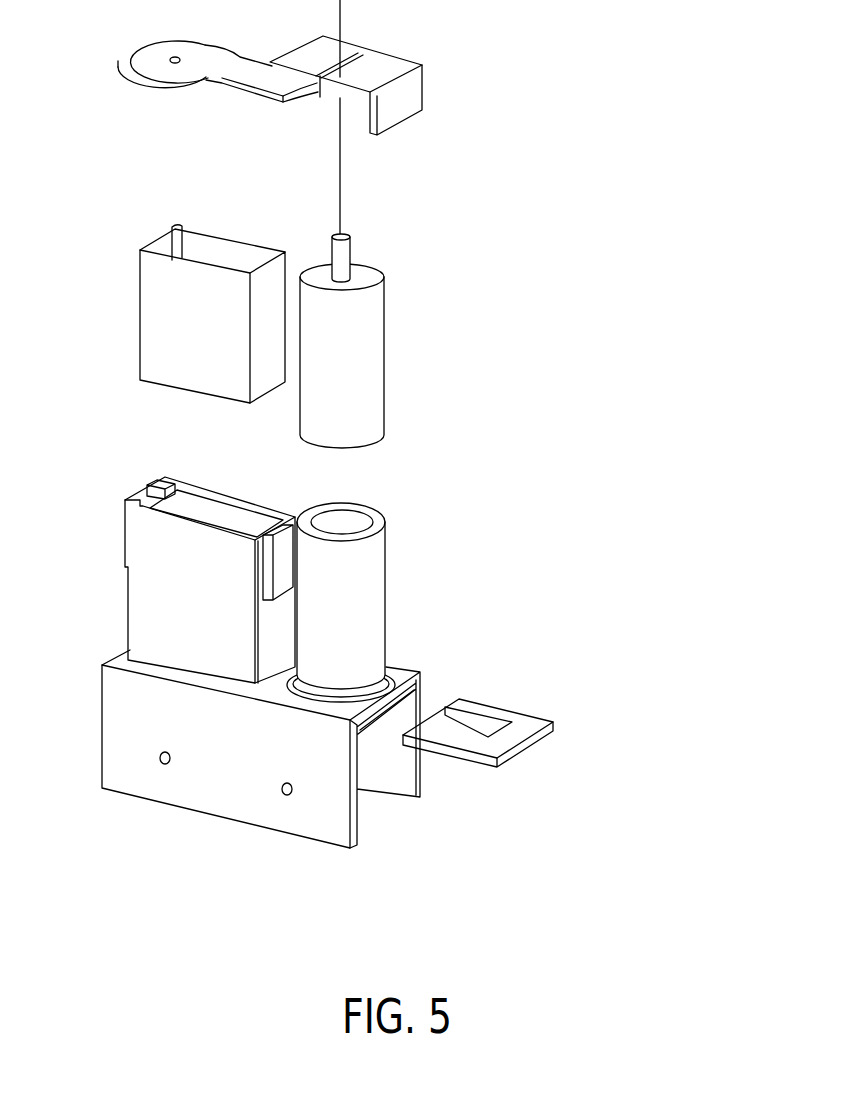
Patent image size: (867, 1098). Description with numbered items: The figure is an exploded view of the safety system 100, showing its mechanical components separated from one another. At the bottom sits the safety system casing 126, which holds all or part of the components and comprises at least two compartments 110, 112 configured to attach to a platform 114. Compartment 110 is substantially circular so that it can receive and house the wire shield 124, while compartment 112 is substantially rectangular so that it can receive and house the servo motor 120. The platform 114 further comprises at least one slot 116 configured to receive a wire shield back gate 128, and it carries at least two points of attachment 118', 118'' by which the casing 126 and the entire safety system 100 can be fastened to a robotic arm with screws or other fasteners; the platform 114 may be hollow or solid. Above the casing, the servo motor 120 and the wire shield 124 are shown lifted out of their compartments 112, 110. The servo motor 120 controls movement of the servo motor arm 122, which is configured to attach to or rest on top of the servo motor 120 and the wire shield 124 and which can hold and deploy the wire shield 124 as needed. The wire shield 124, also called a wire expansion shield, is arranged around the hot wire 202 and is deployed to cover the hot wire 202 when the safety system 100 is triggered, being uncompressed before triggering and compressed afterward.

The safety system 100 is at (644, 356).
The compartment 110 is at (378, 645).
The compartment 112 is at (143, 603).
The platform 114 is at (340, 813).
The slot 116 is at (393, 709).
The point of attachment 118' is at (149, 823).
The point of attachment 118'' is at (269, 851).
The servo motor 120 is at (149, 320).
The servo motor arm 122 is at (423, 75).
The wire shield 124 is at (383, 313).
The safety system casing 126 is at (417, 603).
The wire shield back gate 128 is at (533, 744).
The hot wire 202 is at (342, 182).